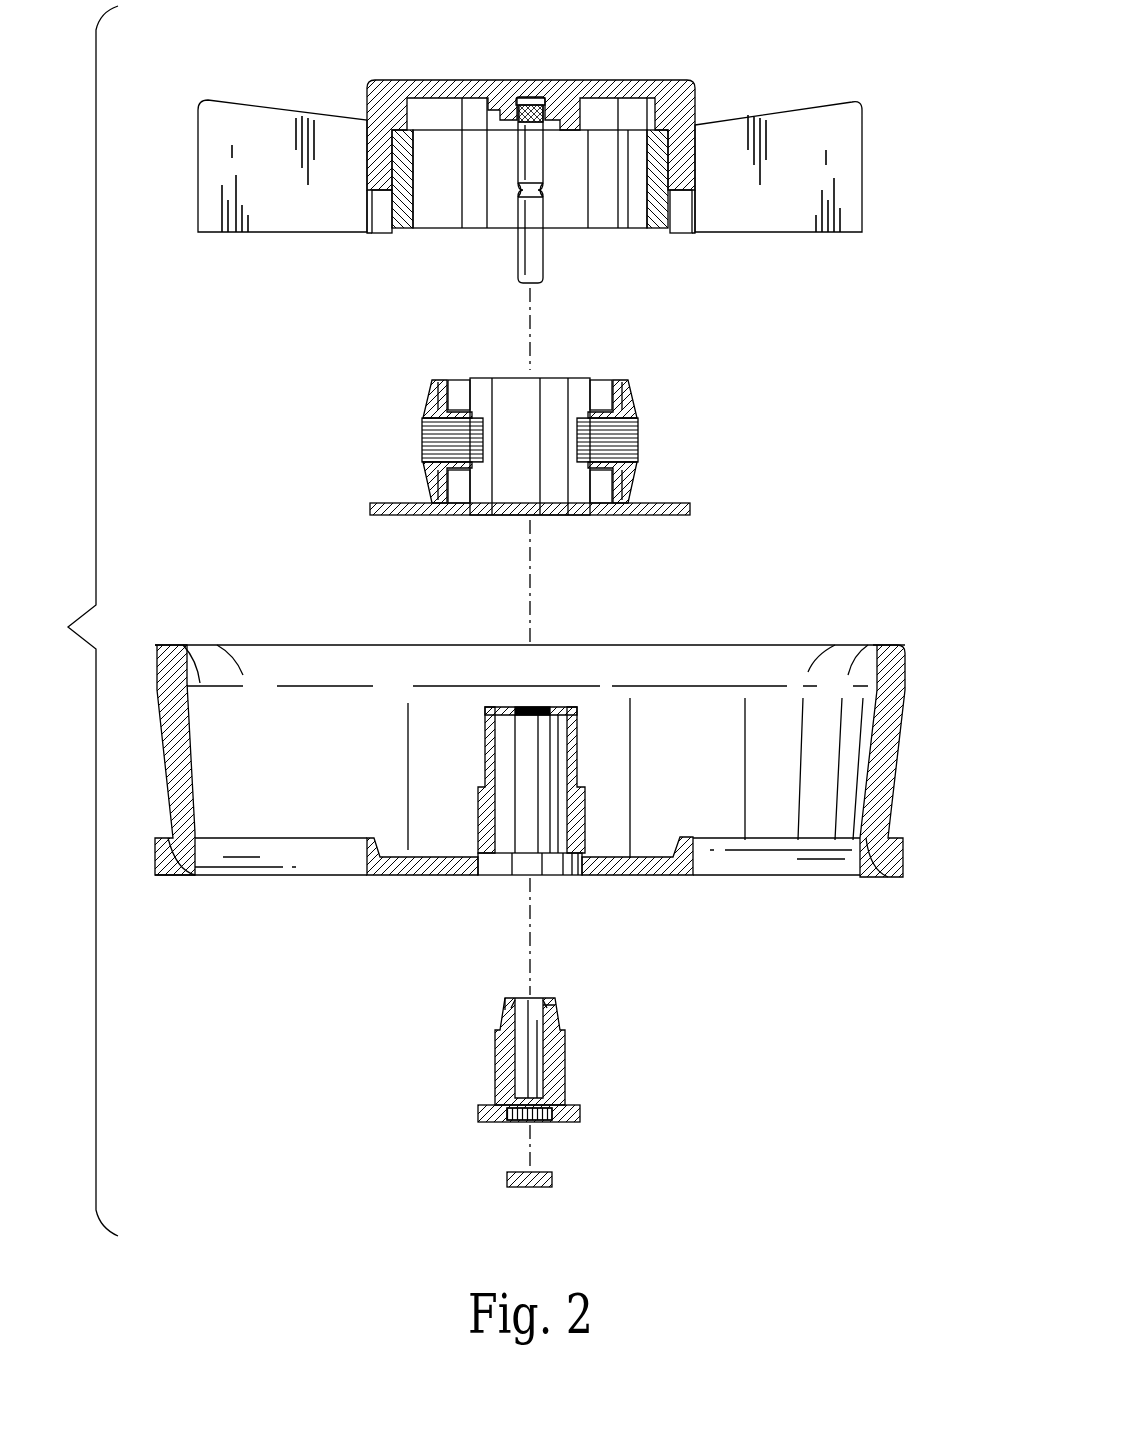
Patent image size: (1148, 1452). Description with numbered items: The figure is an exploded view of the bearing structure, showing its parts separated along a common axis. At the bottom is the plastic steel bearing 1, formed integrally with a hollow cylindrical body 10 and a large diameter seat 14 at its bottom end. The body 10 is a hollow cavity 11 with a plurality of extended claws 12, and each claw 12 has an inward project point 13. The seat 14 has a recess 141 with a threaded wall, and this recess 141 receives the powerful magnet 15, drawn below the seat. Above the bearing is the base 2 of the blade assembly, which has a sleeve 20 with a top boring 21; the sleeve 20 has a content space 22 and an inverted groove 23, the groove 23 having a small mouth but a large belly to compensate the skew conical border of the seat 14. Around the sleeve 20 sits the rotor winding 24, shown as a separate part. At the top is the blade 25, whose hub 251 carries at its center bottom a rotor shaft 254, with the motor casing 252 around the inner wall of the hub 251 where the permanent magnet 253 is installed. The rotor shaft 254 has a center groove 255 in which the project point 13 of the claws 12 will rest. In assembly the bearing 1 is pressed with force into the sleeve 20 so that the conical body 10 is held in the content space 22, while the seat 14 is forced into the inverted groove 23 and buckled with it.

The plastic steel bearing 1 is at (577, 1068).
The hollow cylindrical body 10 is at (563, 1042).
The hollow cavity 11 is at (520, 1067).
The extended claws 12 is at (552, 1008).
The inward project point 13 is at (507, 1003).
The large diameter seat 14 is at (582, 1113).
The recess 141 is at (508, 1120).
The powerful magnet 15 is at (550, 1180).
The base 2 is at (645, 850).
The sleeve 20 is at (577, 745).
The top boring 21 is at (527, 707).
The content space 22 is at (498, 817).
The inverted groove 23 is at (483, 870).
The rotor winding 24 is at (637, 435).
The blade 25 is at (862, 145).
The hub 251 is at (558, 90).
The motor casing 252 is at (392, 217).
The permanent magnet 253 is at (403, 217).
The rotor shaft 254 is at (527, 260).
The center groove 255 is at (533, 197).